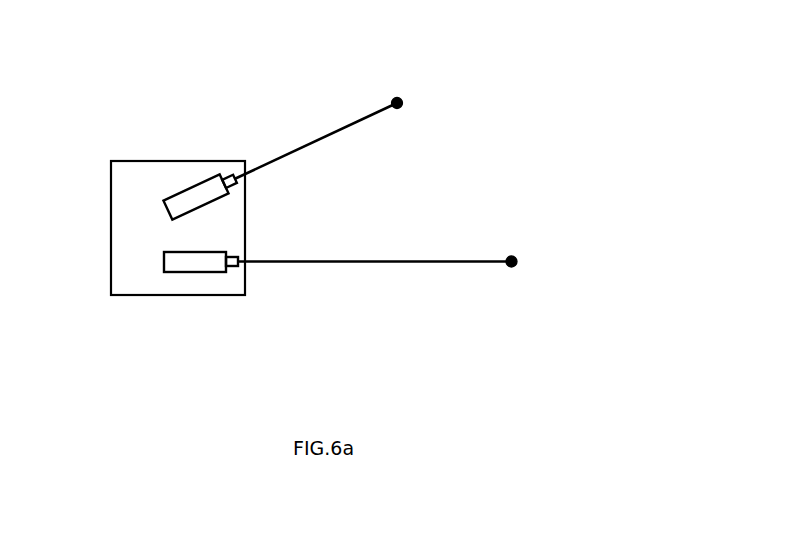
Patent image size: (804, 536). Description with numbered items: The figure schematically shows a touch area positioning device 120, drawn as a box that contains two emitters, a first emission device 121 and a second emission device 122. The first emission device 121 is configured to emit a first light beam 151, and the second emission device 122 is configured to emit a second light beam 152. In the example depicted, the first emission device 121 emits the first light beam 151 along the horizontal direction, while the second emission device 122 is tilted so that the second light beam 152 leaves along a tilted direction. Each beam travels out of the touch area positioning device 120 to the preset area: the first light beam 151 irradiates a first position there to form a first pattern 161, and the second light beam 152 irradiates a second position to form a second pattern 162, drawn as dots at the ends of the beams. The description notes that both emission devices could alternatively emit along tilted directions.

The touch area positioning device 120 is at (130, 283).
The first emission device 121 is at (130, 190).
The second emission device 122 is at (160, 122).
The first light beam 151 is at (375, 337).
The second light beam 152 is at (370, 229).
The first pattern 161 is at (572, 212).
The second pattern 162 is at (463, 66).